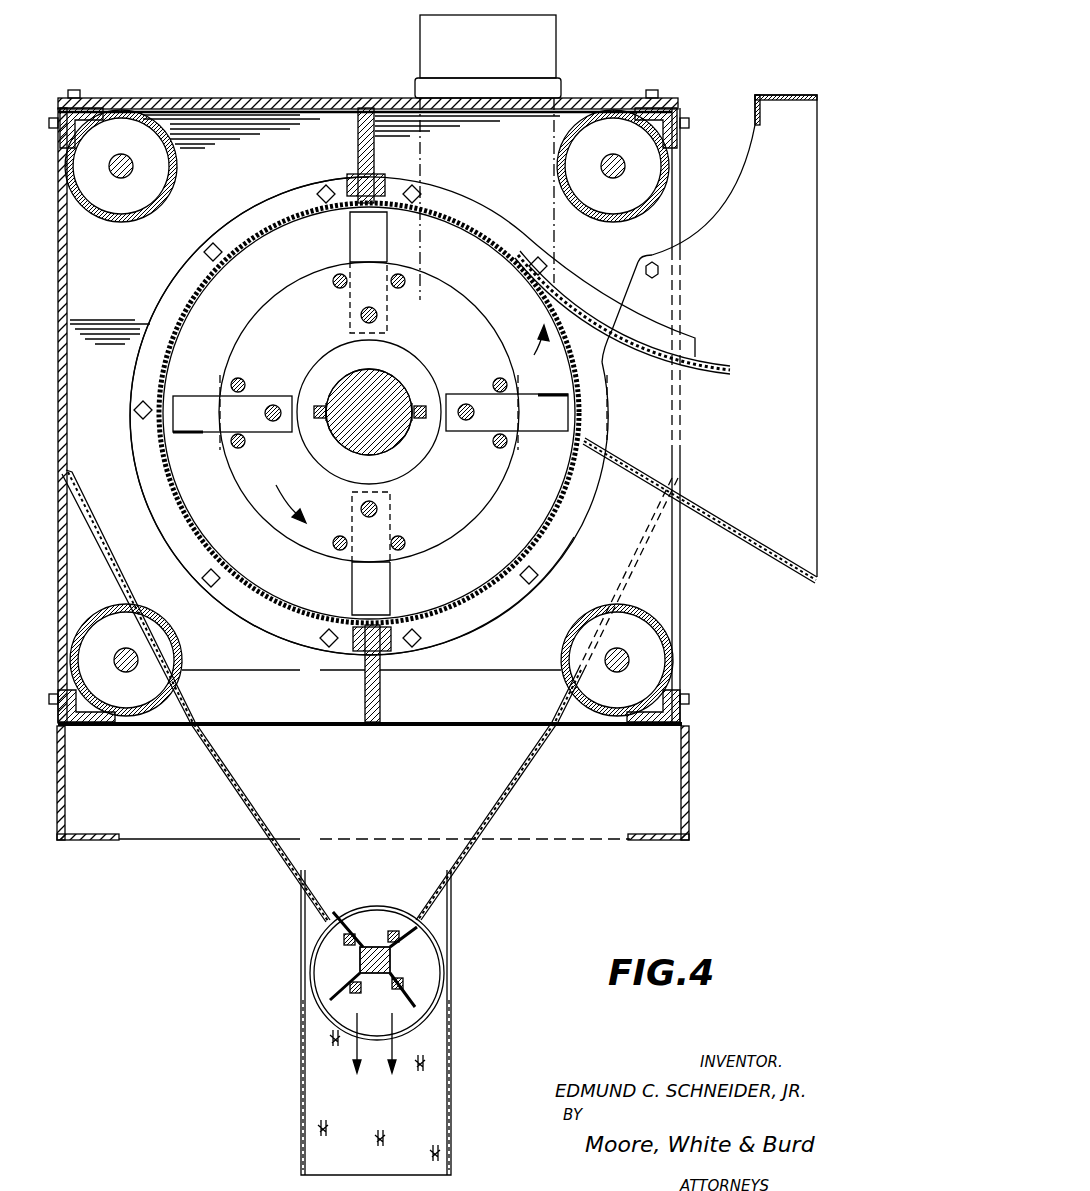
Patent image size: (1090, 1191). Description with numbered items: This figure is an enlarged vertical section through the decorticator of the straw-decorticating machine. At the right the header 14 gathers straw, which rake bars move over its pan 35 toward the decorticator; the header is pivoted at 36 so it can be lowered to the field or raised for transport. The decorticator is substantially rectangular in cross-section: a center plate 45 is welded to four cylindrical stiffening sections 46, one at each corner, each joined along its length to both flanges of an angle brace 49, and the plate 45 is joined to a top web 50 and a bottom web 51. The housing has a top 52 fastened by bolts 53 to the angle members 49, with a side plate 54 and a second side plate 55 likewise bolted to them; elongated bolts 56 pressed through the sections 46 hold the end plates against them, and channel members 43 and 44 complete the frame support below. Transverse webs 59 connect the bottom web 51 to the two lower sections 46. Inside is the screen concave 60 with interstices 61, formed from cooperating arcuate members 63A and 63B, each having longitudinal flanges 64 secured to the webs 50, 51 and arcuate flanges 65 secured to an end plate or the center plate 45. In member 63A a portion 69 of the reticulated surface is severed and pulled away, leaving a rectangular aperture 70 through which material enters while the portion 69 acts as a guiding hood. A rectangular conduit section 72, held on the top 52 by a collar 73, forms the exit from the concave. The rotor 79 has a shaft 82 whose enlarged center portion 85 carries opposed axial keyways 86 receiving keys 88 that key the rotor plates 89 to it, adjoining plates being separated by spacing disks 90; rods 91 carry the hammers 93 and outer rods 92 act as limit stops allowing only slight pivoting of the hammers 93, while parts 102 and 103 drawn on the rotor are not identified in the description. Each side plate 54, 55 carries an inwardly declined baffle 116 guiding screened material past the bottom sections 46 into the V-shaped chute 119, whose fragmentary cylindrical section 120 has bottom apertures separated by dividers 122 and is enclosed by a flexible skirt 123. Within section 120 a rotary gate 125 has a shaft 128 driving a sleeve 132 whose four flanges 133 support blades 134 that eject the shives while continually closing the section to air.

The header 14 is at (786, 98).
The pan 35 is at (740, 540).
The pivot 36 is at (660, 268).
The channel member 43 is at (690, 755).
The channel member 44 is at (66, 782).
The center plate 45 is at (284, 163).
The cylindrical stiffening section 46 is at (177, 168).
The angle brace 49 is at (58, 128).
The top web 50 is at (358, 110).
The bottom web 51 is at (382, 703).
The top 52 is at (240, 98).
The bolt 53 is at (78, 92).
The side plate 54 is at (60, 295).
The second side plate 55 is at (680, 180).
The elongated bolt 56 is at (121, 179).
The transverse web 59 is at (504, 700).
The screen concave 60 is at (158, 382).
The interstices 61 is at (250, 240).
The arcuate member 63A is at (574, 516).
The arcuate member 63B is at (166, 482).
The longitudinal flange 64 is at (390, 172).
The arcuate flange 65 is at (260, 208).
The hood 69 is at (705, 362).
The aperture 70 is at (583, 388).
The conduit section 72 is at (557, 35).
The collar 73 is at (560, 82).
The rotor 79 is at (230, 342).
The shaft 82 is at (399, 383).
The enlarged portion 85 is at (352, 375).
The axial keyway 86 is at (324, 405).
The key 88 is at (424, 408).
The rotor plate 89 is at (485, 495).
The spacing disk 90 is at (417, 472).
The rod 91 is at (377, 315).
The rod 92 is at (336, 276).
The hammer 93 is at (375, 225).
The blade holder 102 is at (390, 237).
The blade 103 is at (350, 225).
The baffle 116 is at (112, 542).
The V-shaped chute 119 is at (510, 780).
The fragmentary cylindrical section 120 is at (442, 996).
The divider 122 is at (410, 1024).
The flexible skirt 123 is at (302, 1068).
The rotary gate 125 is at (349, 915).
The shaft 128 is at (360, 960).
The sleeve 132 is at (378, 945).
The flange 133 is at (400, 933).
The blade 134 is at (345, 910).